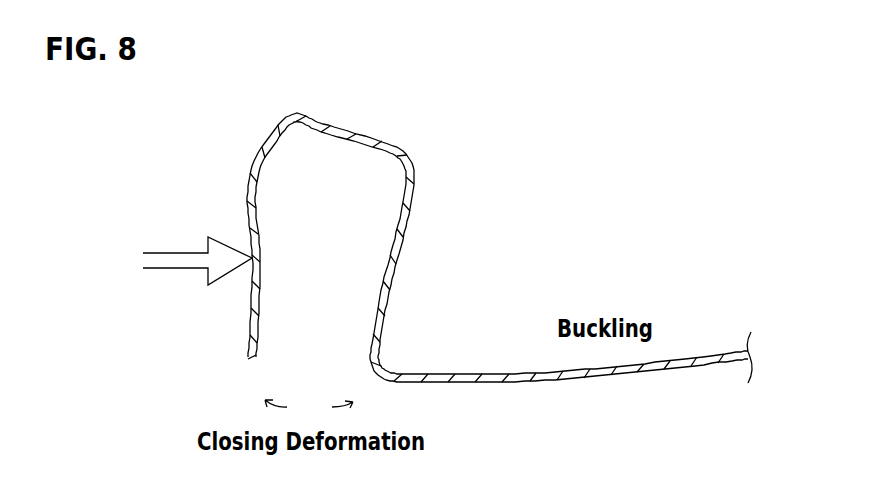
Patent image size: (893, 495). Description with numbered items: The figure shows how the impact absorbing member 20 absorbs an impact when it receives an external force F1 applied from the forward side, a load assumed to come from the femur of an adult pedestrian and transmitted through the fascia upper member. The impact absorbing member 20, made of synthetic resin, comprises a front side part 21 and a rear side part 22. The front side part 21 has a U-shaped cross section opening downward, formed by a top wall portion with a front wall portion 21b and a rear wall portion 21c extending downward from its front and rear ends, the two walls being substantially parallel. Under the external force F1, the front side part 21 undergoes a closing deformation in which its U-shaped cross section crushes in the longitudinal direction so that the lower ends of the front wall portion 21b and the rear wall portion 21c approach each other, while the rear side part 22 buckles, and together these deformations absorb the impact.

The impact absorbing member 20 is at (586, 132).
The front side part 21 is at (333, 127).
The front wall portion 21b is at (247, 202).
The rear wall portion 21c is at (398, 252).
The rear side part 22 is at (521, 382).
The external force F1 is at (179, 261).